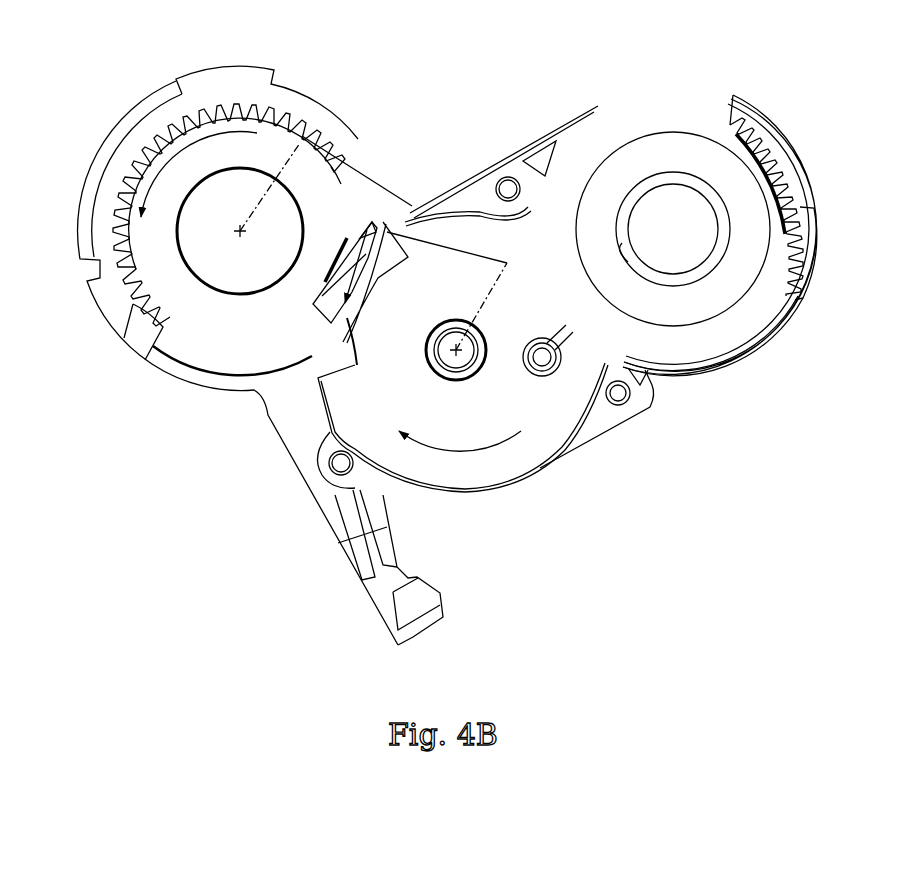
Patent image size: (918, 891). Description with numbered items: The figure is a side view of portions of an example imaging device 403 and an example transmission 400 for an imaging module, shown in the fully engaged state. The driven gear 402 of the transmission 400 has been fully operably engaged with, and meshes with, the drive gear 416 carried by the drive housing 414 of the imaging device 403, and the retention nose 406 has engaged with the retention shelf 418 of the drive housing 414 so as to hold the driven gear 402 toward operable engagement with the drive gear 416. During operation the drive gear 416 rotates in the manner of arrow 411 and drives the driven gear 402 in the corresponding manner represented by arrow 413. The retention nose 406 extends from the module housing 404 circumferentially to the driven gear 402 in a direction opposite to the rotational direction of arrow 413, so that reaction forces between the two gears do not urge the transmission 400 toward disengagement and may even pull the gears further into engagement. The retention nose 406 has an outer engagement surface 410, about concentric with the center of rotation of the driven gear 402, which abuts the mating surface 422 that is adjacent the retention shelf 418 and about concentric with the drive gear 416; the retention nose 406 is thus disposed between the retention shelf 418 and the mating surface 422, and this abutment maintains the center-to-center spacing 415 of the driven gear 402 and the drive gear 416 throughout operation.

The transmission 400 is at (503, 86).
The driven gear 402 is at (355, 365).
The imaging device 403 is at (95, 540).
The module housing 404 is at (582, 457).
The retention nose 406 is at (356, 278).
The outer engagement surface 410 is at (358, 260).
The arrow 411 is at (148, 182).
The arrow 413 is at (455, 455).
The drive housing 414 is at (205, 402).
The center-to-center spacing 415 is at (402, 212).
The drive gear 416 is at (142, 303).
The retention shelf 418 is at (320, 270).
The mating surface 422 is at (328, 274).